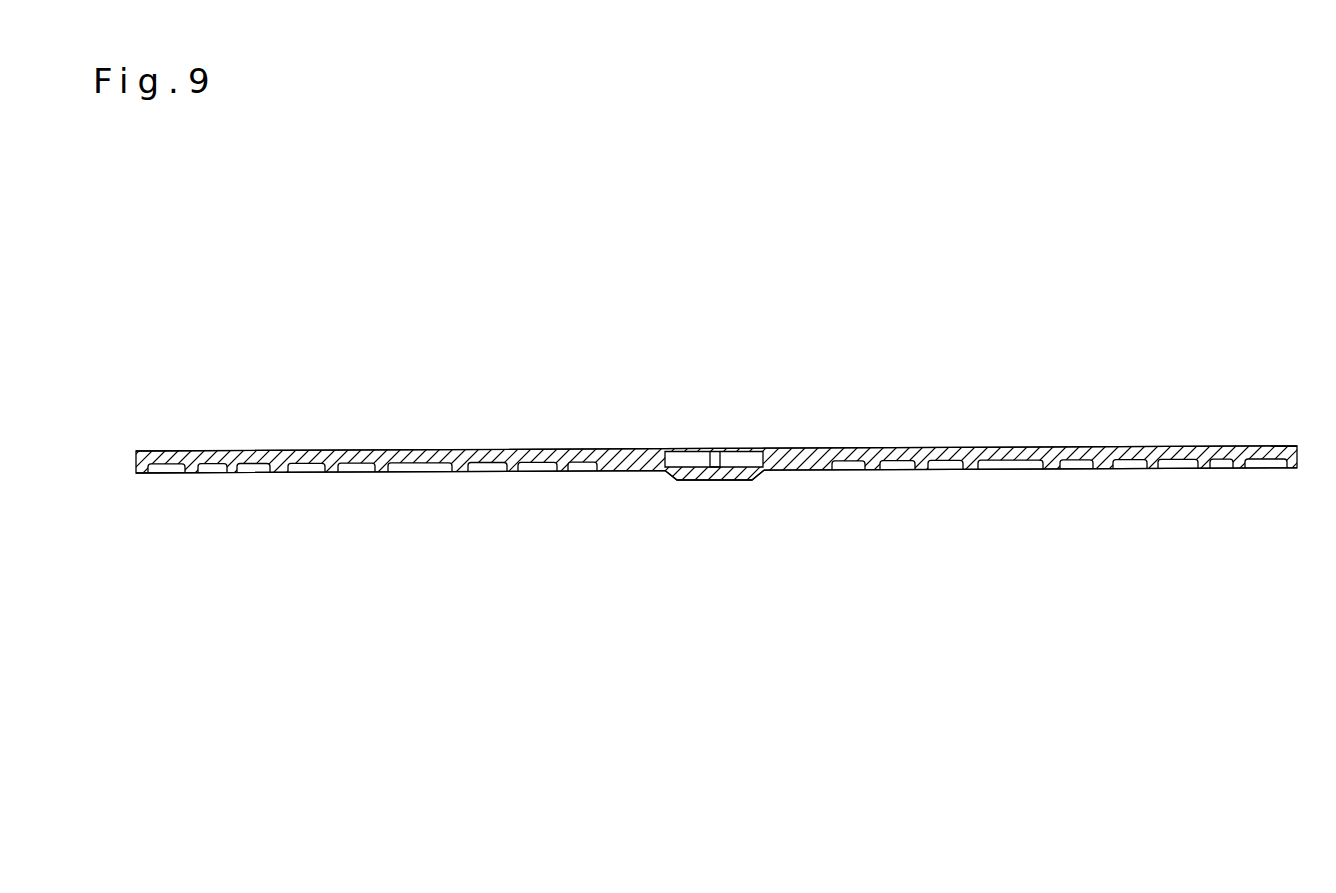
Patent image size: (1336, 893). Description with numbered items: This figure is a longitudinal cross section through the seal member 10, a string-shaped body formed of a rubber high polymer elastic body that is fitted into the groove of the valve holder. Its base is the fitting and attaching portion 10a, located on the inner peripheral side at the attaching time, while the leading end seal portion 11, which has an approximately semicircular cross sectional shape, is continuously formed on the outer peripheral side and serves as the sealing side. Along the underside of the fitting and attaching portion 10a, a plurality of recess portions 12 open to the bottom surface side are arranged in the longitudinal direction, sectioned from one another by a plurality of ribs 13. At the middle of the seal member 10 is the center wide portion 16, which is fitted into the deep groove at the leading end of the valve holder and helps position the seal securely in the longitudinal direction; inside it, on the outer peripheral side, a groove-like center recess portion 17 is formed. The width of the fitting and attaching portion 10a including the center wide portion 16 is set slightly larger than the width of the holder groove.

The seal member 10 is at (812, 435).
The fitting and attaching portion 10a is at (617, 472).
The leading end seal portion 11 is at (475, 450).
The recess portions 12 is at (305, 472).
The ribs 13 is at (193, 472).
The center wide portion 16 is at (718, 481).
The center recess portion 17 is at (732, 460).